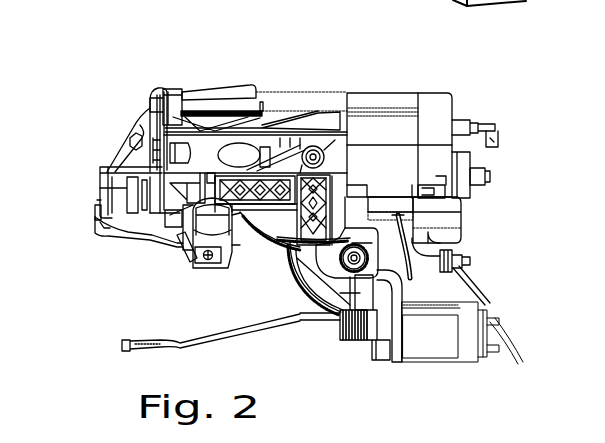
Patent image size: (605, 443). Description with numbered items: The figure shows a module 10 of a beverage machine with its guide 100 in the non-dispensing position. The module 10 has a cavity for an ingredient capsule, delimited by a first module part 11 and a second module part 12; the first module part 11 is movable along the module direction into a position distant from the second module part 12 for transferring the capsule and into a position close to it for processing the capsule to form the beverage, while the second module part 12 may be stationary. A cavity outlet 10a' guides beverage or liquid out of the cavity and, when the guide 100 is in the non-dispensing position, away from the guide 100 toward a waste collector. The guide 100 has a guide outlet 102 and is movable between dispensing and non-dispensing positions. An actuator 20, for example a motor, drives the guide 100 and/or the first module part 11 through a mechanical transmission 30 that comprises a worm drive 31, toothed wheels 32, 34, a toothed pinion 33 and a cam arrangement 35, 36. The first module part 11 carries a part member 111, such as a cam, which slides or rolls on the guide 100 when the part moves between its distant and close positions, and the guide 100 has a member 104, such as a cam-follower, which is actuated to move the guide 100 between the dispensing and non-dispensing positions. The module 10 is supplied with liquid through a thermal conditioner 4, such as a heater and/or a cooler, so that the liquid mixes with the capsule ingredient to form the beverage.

The module 10 is at (183, 49).
The cavity outlet 10a' is at (129, 157).
The first module part 11 is at (276, 112).
The second module part 12 is at (366, 91).
The thermal conditioner 4 is at (433, 128).
The toothed wheel 34 is at (311, 151).
The cam arrangement 36 is at (288, 222).
The cam arrangement 35 is at (311, 243).
The part member 111 is at (96, 212).
The member 104 is at (128, 233).
The guide 100 is at (180, 243).
The guide outlet 102 is at (206, 263).
The toothed pinion 33 is at (343, 264).
The toothed wheel 32 is at (397, 262).
The actuator 20 is at (473, 318).
The worm drive 31 is at (346, 340).
The mechanical transmission 30 is at (296, 320).